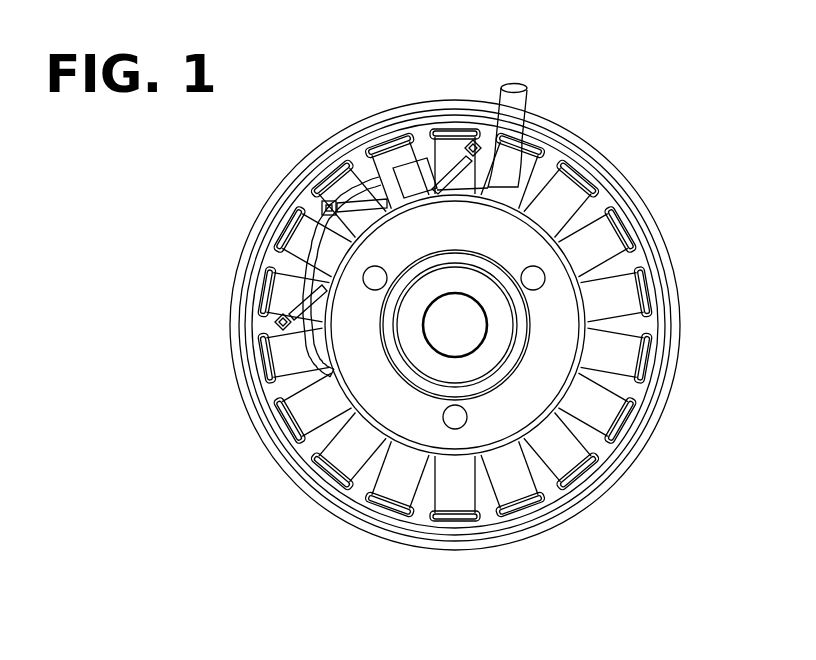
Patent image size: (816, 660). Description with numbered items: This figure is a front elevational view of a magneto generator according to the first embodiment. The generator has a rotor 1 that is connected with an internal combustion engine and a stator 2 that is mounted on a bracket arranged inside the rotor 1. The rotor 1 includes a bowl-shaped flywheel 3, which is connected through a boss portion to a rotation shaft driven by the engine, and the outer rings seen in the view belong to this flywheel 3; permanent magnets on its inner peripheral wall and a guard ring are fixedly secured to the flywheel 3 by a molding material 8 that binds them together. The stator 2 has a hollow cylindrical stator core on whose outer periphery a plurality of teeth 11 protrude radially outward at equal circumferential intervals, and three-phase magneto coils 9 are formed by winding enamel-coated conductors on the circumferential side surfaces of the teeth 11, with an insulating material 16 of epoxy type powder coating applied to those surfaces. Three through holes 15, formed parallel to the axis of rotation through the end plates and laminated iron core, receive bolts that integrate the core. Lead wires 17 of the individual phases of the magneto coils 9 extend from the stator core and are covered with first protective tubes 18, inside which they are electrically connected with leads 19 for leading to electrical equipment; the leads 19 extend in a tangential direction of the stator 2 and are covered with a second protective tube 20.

The rotor 1 is at (574, 126).
The stator 2 is at (493, 421).
The flywheel 3 is at (600, 148).
The molding material 8 is at (536, 125).
The magneto coils 9 is at (345, 448).
The teeth 11 is at (378, 146).
The through holes 15 is at (537, 267).
The insulating material 16 is at (568, 453).
The lead wires 17 is at (335, 363).
The first protective tubes 18 is at (278, 353).
The leads 19 is at (348, 146).
The second protective tube 20 is at (492, 148).